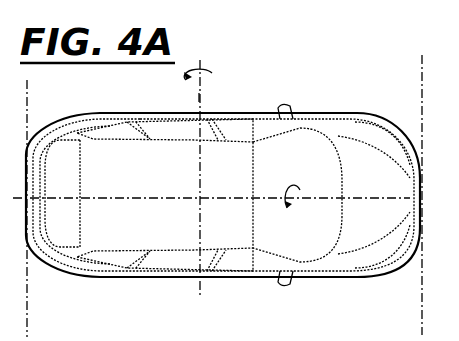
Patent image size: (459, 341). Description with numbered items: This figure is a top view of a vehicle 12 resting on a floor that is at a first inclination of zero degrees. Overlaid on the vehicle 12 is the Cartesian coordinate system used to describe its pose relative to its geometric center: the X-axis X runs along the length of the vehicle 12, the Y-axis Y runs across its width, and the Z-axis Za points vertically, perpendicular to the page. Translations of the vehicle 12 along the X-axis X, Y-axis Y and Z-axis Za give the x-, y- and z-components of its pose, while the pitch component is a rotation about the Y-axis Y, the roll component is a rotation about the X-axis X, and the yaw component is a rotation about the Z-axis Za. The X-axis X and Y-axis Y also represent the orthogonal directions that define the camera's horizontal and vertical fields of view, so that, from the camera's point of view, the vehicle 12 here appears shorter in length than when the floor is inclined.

The vehicle 12 is at (338, 112).
The X-axis X is at (365, 198).
The Y-axis Y is at (199, 99).
The Z-axis Za is at (198, 177).